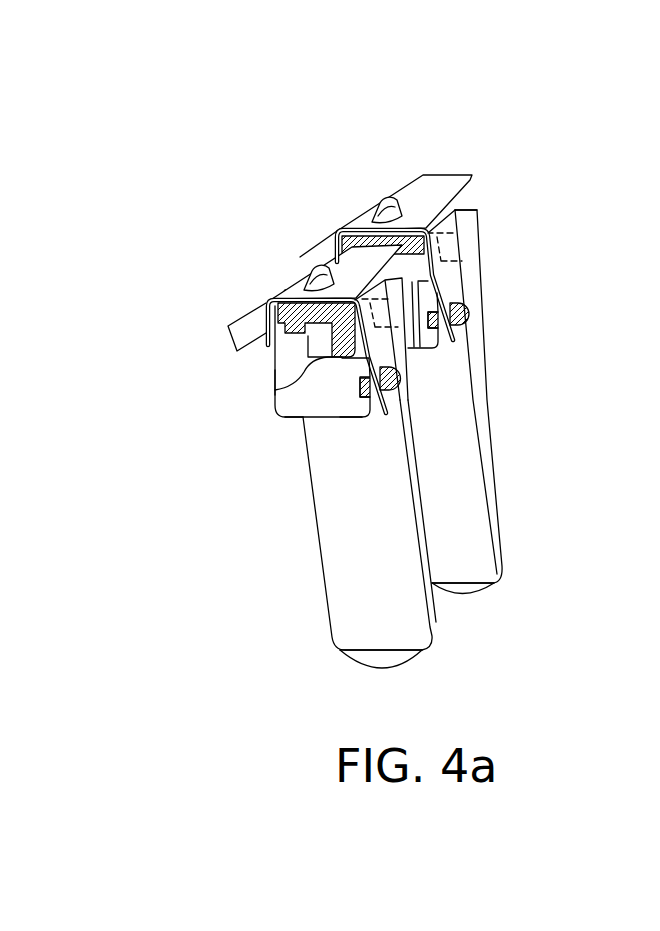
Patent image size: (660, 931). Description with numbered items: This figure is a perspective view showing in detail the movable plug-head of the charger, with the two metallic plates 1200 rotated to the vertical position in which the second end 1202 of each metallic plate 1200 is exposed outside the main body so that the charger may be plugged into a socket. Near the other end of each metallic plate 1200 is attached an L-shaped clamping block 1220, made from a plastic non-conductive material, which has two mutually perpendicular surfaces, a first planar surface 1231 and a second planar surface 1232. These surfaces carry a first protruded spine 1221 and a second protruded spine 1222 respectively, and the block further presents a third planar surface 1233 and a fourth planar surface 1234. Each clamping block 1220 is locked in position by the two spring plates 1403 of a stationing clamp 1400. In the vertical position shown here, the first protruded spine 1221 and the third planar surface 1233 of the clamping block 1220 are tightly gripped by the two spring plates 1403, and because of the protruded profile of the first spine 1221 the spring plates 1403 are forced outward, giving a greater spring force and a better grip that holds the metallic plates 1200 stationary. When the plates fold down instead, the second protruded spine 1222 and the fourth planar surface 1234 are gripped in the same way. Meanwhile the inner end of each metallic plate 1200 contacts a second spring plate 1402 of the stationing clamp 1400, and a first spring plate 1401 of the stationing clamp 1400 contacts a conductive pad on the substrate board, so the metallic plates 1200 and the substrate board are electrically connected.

The metallic plate 1200 is at (343, 543).
The second end 1202 is at (358, 658).
The L-shaped clamping block 1220 is at (476, 237).
The first protruded spine 1221 is at (358, 392).
The second protruded spine 1222 is at (292, 378).
The first planar surface 1231 is at (384, 392).
The second planar surface 1232 is at (294, 329).
The third planar surface 1233 is at (276, 382).
The fourth planar surface 1234 is at (350, 420).
The stationing clamp 1400 is at (337, 236).
The first spring plate 1401 is at (378, 200).
The second spring plate 1402 is at (475, 178).
The spring plates 1403 is at (277, 426).